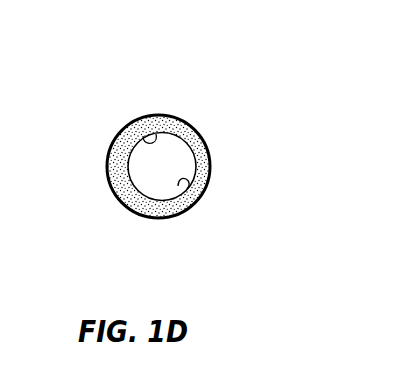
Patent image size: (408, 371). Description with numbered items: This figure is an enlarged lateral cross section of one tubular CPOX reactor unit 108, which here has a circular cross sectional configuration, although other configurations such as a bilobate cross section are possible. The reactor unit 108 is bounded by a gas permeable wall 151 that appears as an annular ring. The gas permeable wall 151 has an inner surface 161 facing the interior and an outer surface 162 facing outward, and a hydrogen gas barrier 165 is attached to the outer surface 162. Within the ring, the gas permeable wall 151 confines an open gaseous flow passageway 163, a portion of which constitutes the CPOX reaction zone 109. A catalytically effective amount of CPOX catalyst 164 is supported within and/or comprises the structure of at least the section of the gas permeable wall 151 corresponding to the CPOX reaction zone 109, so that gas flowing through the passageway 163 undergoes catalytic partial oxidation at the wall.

The CPOX reactor unit 108 is at (187, 72).
The gas permeable wall 151 is at (123, 207).
The hydrogen gas barrier 165 is at (105, 177).
The CPOX catalyst 164 is at (191, 124).
The open gaseous flow passageway 163 is at (173, 160).
The inner surface 161 is at (155, 137).
The outer surface 162 is at (184, 180).
The CPOX reaction zone 109 is at (157, 187).